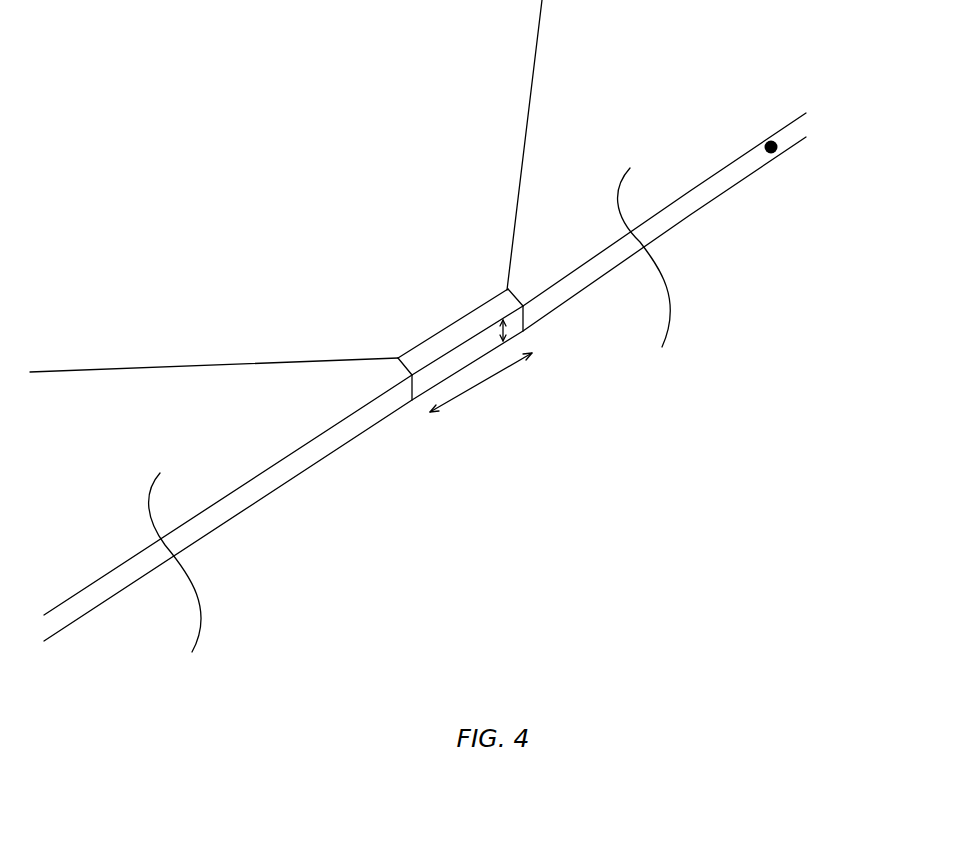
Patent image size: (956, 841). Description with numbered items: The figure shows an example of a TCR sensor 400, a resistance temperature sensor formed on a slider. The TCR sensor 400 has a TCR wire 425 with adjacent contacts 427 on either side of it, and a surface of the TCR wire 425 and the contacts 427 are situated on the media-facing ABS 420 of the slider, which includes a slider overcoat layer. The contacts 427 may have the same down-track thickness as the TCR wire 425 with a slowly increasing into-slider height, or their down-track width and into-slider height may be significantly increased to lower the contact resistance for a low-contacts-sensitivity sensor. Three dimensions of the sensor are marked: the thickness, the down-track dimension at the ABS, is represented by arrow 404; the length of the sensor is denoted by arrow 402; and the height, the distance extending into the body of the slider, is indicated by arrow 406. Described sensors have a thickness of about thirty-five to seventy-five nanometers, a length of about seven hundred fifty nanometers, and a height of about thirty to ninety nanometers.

The TCR sensor 400 is at (237, 152).
The arrow indicating sensor length 402 is at (518, 364).
The arrow indicating sensor thickness 404 is at (525, 309).
The arrow indicating sensor height 406 is at (435, 348).
The media-facing ABS 420 is at (783, 160).
The TCR wire 425 is at (467, 360).
The contacts 427 is at (416, 428).